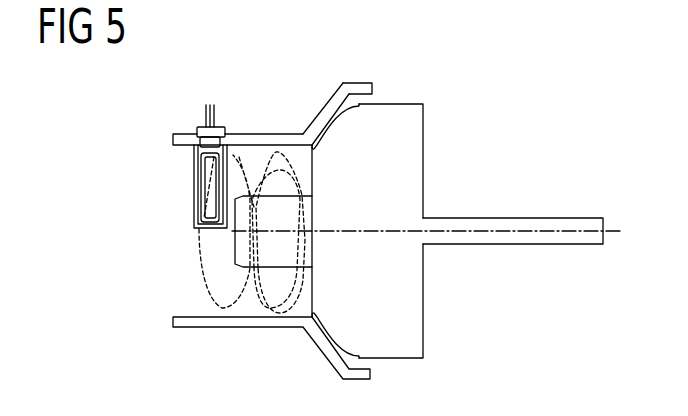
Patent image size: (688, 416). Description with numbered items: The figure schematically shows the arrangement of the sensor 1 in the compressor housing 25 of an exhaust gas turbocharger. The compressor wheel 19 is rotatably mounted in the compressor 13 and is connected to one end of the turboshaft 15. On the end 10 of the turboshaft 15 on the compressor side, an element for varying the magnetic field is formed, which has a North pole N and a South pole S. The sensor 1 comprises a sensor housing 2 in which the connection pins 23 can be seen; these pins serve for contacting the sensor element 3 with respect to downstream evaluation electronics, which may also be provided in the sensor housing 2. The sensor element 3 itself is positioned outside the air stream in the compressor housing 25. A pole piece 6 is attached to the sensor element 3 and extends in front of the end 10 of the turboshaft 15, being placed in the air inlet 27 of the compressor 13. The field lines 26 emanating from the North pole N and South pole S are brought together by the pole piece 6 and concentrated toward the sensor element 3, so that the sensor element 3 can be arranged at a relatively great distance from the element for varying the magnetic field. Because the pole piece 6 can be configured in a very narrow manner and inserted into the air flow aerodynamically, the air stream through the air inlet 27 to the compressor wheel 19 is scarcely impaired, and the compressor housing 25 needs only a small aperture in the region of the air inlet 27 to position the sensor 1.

The sensor 1 is at (191, 108).
The sensor housing 2 is at (197, 131).
The sensor element 3 is at (233, 135).
The pole piece 6 is at (200, 171).
The end of the turboshaft on the compressor side 10 is at (222, 243).
The compressor 13 is at (291, 88).
The turboshaft 15 is at (562, 223).
The compressor wheel 19 is at (403, 130).
The connection pins 23 is at (215, 113).
The compressor housing 25 is at (355, 83).
The field lines 26 is at (198, 249).
The air inlet 27 is at (184, 201).
The North pole N is at (283, 214).
The South pole S is at (283, 249).